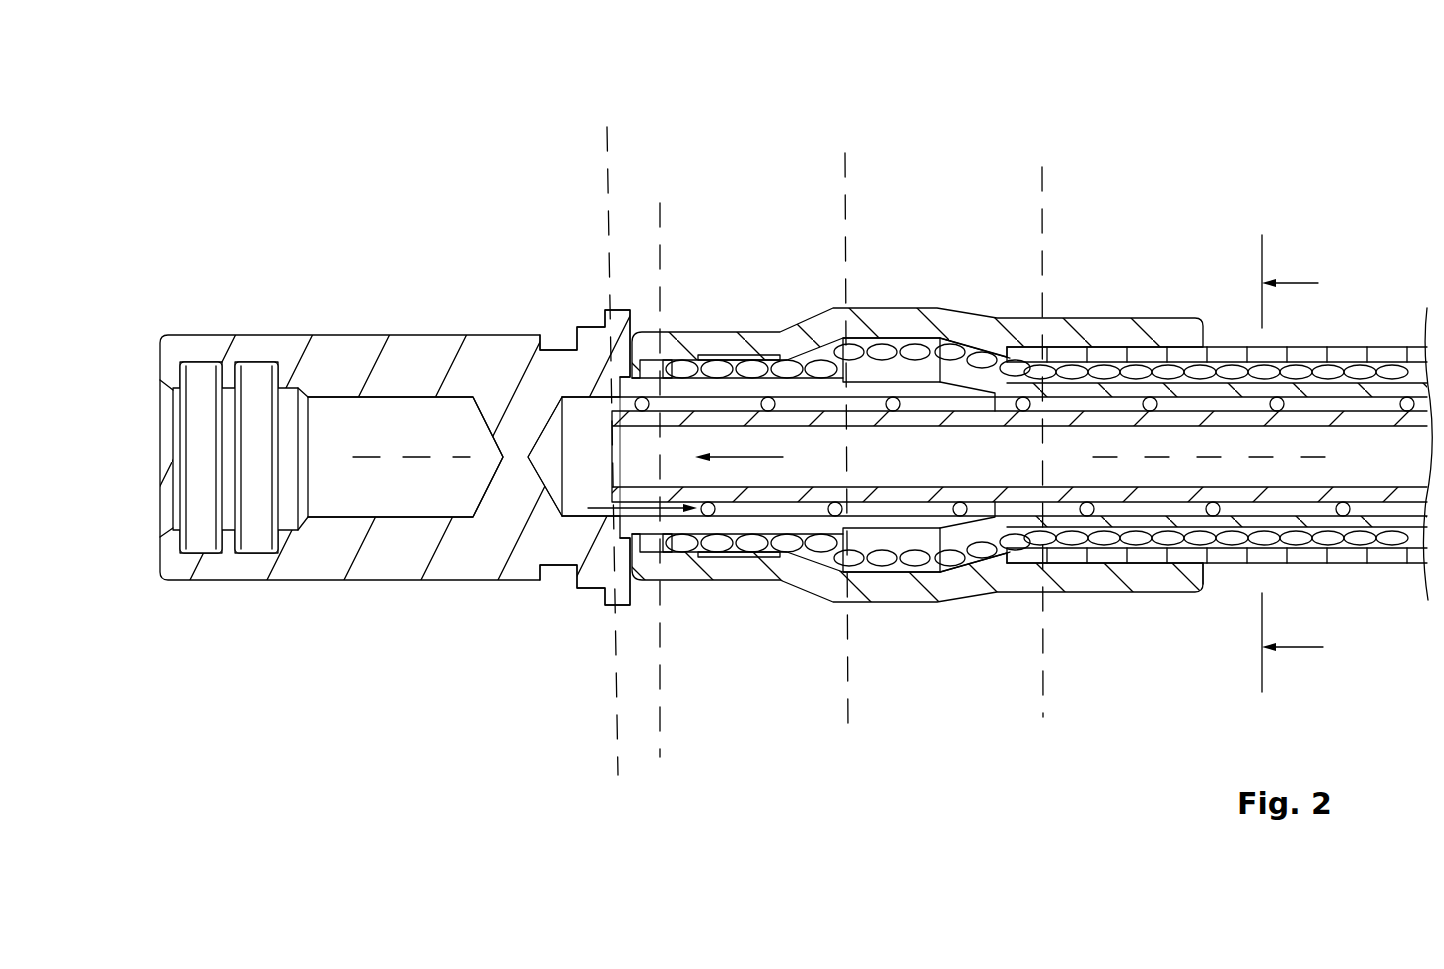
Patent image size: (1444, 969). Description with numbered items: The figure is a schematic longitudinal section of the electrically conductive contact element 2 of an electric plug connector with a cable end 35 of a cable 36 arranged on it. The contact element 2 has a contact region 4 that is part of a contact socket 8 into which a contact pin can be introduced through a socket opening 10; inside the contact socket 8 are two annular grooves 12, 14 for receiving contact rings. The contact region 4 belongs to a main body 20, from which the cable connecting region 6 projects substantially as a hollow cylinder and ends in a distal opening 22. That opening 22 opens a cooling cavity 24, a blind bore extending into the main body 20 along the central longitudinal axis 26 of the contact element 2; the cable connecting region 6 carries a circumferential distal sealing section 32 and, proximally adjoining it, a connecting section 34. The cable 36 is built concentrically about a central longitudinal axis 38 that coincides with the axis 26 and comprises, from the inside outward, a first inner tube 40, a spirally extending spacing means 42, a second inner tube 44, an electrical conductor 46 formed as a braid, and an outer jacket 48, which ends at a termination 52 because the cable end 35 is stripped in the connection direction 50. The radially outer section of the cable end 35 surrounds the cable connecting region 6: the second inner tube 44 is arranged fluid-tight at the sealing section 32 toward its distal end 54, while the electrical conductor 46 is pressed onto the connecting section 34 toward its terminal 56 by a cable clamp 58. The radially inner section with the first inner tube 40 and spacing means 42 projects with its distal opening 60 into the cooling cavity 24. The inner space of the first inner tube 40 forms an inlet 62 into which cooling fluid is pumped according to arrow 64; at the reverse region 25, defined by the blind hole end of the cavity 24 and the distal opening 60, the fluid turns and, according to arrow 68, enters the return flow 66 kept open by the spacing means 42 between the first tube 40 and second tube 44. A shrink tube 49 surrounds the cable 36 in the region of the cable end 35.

The contact element 2 is at (411, 200).
The contact region 4 is at (176, 618).
The cable connecting region 6 is at (776, 98).
The contact socket 8 is at (418, 438).
The socket opening 10 is at (150, 454).
The annular groove 12 is at (203, 372).
The annular groove 14 is at (258, 375).
The main body 20 is at (318, 585).
The distal opening 22 is at (1067, 545).
The cooling cavity 24 is at (575, 490).
The reverse region 25 is at (583, 428).
The central longitudinal axis 26 is at (408, 560).
The sealing section 32 is at (933, 457).
The connecting section 34 is at (790, 300).
The cable end 35 is at (727, 773).
The cable 36 is at (967, 788).
The central longitudinal axis 38 is at (1213, 592).
The first inner tube 40 is at (1400, 565).
The spacing means 42 is at (1365, 565).
The second inner tube 44 is at (1400, 345).
The electrical conductor 46 is at (1345, 345).
The outer jacket 48 is at (1073, 312).
The shrink tube 49 is at (1140, 592).
The connection direction 50 is at (1075, 93).
The termination 52 is at (1040, 182).
The distal end 54 is at (848, 172).
The terminal 56 is at (660, 210).
The cable clamp 58 is at (728, 300).
The distal opening 60 is at (606, 135).
The inlet 62 is at (940, 520).
The arrow 64 is at (758, 473).
The return flow 66 is at (798, 507).
The arrow 68 is at (670, 513).